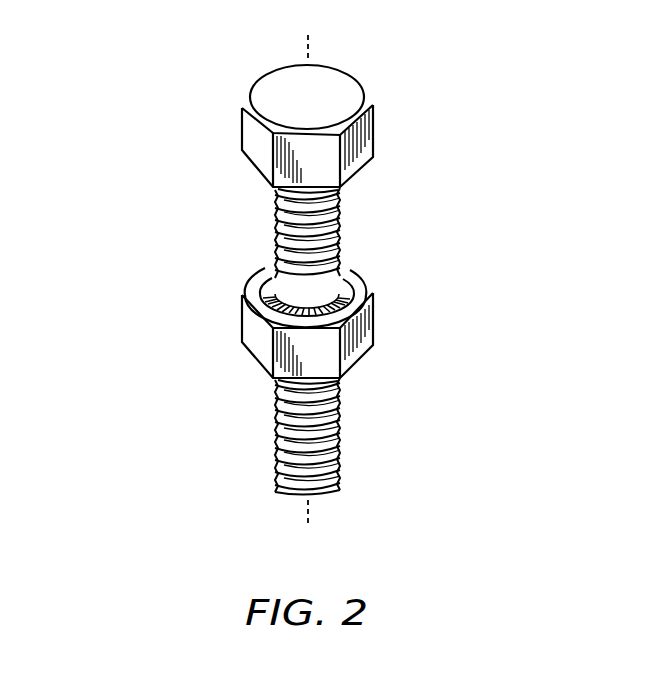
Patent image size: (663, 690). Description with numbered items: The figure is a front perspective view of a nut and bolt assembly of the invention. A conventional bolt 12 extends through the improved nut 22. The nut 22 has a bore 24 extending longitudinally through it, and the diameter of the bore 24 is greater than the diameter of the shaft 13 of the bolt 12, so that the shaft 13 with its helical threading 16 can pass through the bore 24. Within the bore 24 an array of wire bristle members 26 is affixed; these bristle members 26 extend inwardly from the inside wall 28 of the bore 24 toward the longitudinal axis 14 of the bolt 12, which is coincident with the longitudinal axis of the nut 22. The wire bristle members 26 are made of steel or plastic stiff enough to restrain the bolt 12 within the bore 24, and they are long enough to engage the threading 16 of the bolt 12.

The bolt 12 is at (370, 127).
The shaft 13 is at (340, 200).
The longitudinal axis 14 is at (310, 283).
The helical threading 16 is at (350, 262).
The improved nut 22 is at (363, 358).
The bore 24 is at (282, 292).
The wire bristle members 26 is at (268, 290).
The inside wall 28 is at (283, 300).